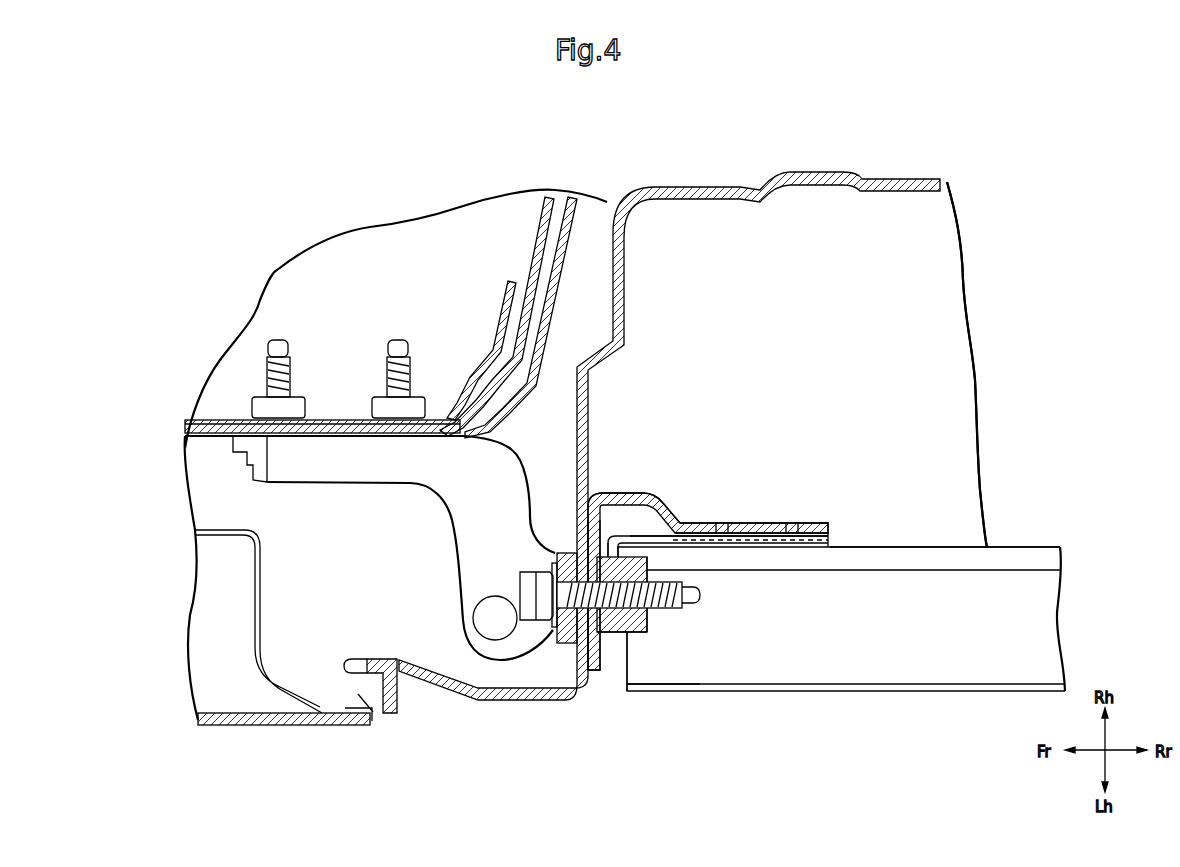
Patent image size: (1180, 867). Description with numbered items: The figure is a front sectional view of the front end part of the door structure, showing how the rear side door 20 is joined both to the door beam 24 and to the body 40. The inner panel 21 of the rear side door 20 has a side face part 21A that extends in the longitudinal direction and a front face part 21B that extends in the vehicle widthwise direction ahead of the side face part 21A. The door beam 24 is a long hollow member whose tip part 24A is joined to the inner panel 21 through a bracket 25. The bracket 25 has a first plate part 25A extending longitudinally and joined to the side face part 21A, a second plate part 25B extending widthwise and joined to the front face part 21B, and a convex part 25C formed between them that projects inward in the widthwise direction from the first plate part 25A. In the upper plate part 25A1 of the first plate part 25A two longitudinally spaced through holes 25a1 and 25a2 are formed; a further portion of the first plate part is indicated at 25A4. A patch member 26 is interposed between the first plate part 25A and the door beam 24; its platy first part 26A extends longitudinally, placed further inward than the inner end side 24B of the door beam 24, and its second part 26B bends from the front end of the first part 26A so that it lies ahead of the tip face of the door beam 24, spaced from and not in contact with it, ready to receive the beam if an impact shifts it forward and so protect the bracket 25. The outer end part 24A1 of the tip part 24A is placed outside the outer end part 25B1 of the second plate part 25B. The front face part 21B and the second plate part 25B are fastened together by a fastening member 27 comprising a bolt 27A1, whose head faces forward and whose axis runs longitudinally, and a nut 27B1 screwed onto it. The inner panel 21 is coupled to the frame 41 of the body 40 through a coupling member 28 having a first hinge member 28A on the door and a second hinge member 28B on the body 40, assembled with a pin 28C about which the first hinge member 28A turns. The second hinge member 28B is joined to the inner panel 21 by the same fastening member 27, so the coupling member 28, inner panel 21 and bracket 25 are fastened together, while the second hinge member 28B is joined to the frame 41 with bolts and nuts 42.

The rear side door 20 is at (942, 155).
The inner panel 21 is at (989, 383).
The side face part 21A is at (967, 482).
The front face part 21B is at (627, 318).
The door beam 24 is at (928, 672).
The tip part 24A is at (618, 690).
The outer end part 24A1 is at (644, 687).
The inner end side 24B is at (940, 547).
The bracket 25 is at (716, 476).
The first plate part 25A is at (762, 512).
The upper plate part 25A1 is at (767, 523).
The through hole 25a1 is at (722, 523).
The through hole 25a2 is at (795, 523).
The rear end portion 25A4 is at (826, 535).
The second plate part 25B is at (600, 655).
The outer end part 25B1 is at (583, 650).
The convex part 25C is at (628, 497).
The patch member 26 is at (652, 518).
The first part 26A is at (655, 543).
The second part 26B is at (568, 530).
The fastening member 27 is at (633, 637).
The bolt 27A1 is at (697, 650).
The nut 27B1 is at (640, 660).
The coupling member 28 is at (428, 528).
The first hinge member 28A is at (560, 640).
The second hinge member 28B is at (460, 557).
The pin 28C is at (497, 625).
The body 40 is at (468, 338).
The frame 41 is at (345, 437).
The bolts and nuts 42 is at (368, 378).